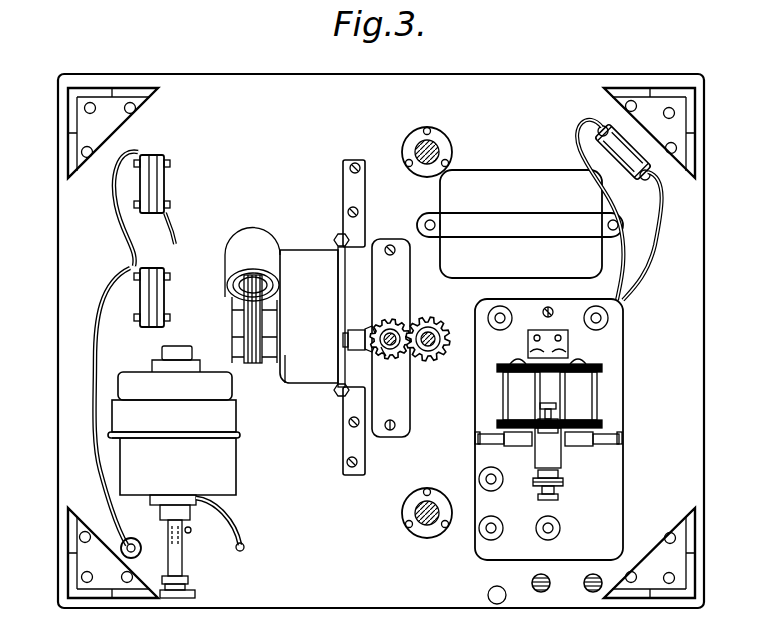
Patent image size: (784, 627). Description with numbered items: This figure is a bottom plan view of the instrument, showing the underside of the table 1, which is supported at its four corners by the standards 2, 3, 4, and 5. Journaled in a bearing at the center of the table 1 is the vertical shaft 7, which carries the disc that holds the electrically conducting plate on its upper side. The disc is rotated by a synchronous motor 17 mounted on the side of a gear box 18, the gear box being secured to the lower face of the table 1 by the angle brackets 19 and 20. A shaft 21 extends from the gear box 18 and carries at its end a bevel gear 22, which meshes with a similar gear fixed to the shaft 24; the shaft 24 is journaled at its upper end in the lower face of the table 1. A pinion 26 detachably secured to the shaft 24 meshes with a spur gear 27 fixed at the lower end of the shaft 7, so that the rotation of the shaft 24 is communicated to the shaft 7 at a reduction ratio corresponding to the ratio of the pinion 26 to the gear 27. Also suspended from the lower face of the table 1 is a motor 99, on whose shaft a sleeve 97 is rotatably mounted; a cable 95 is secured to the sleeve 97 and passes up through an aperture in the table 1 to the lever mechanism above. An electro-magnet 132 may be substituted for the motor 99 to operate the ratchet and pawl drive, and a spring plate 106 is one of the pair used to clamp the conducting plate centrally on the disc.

The table 1 is at (58, 346).
The standard 2 is at (60, 126).
The standard 3 is at (697, 116).
The standard 4 is at (704, 541).
The standard 5 is at (60, 549).
The vertical shaft 7 is at (438, 340).
The synchronous motor 17 is at (232, 253).
The gear box 18 is at (300, 258).
The angle bracket 19 is at (345, 194).
The angle bracket 20 is at (343, 443).
The shaft 21 is at (358, 328).
The bevel gear 22 is at (375, 334).
The shaft 24 is at (392, 360).
The pinion 26 is at (387, 349).
The spur gear 27 is at (436, 355).
The cable 95 is at (183, 558).
The sleeve 97 is at (188, 578).
The motor 99 is at (236, 478).
The spring plate 106 is at (631, 380).
The electro-magnet 132 is at (567, 386).